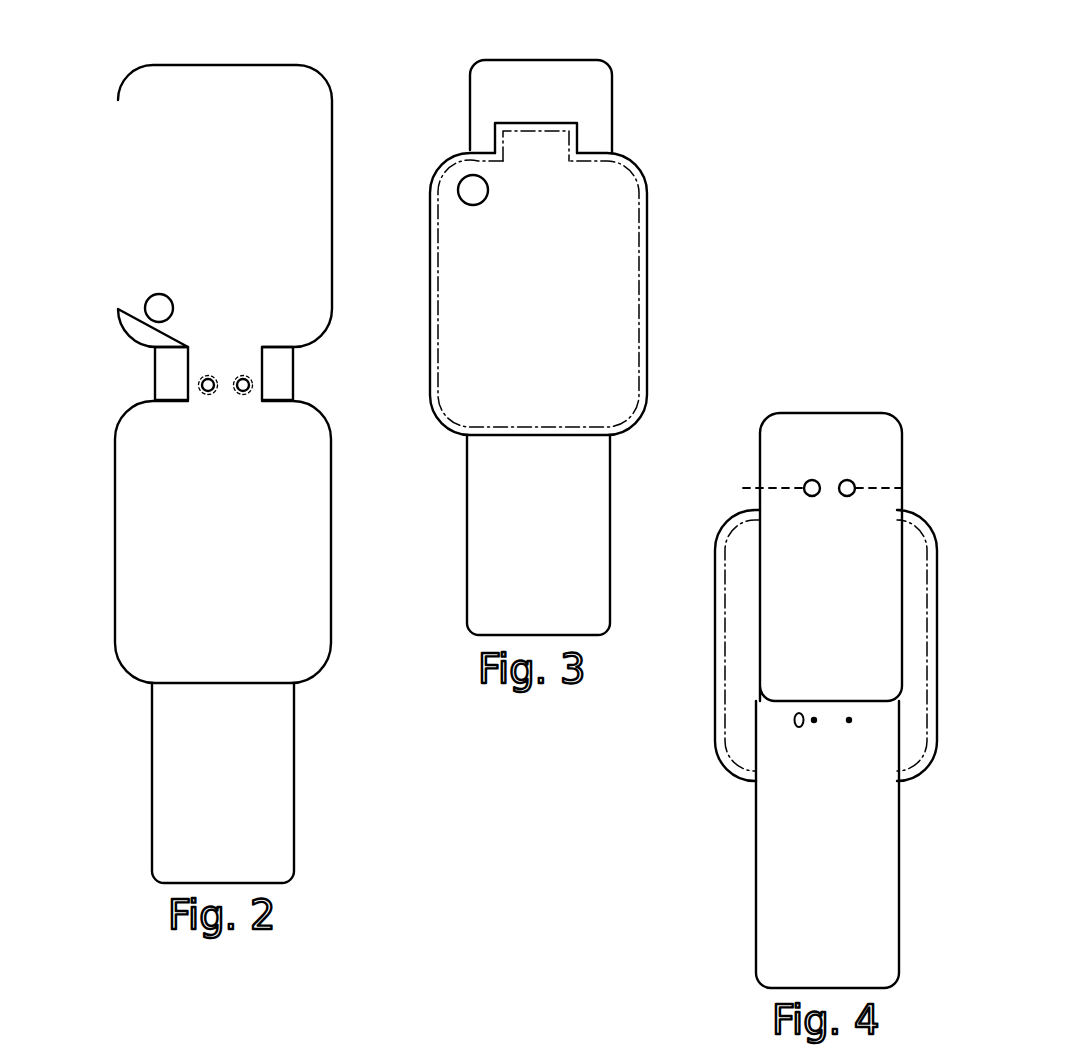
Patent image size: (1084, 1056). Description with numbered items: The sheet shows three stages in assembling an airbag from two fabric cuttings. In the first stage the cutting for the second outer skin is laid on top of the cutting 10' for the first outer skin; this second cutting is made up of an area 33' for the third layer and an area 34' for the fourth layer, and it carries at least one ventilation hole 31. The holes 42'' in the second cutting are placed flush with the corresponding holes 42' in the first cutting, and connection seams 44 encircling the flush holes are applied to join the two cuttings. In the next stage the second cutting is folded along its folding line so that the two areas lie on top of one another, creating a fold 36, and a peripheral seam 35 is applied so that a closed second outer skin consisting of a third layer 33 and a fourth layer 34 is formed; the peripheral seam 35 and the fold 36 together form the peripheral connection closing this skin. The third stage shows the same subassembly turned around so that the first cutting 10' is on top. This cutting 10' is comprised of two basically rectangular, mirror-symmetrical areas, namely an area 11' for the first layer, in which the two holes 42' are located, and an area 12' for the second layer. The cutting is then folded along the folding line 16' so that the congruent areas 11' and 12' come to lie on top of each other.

In FIG. 2, the area for the fourth layer 34' is at (187, 206).
In FIG. 2, the ventilation hole 31 is at (157, 306).
In FIG. 2, the connection seams 44 is at (197, 382).
In FIG. 2, the area for the third layer 33' is at (262, 542).
In FIG. 2, the cutting for the first outer skin 10' is at (273, 783).
In FIG. 3, the fold 36 is at (537, 121).
In FIG. 3, the third layer 33 is at (594, 347).
In FIG. 4, the third layer 33 is at (788, 645).
In FIG. 3, the peripheral seam 35 is at (648, 283).
In FIG. 3, the fourth layer 34 is at (593, 264).
In FIG. 4, the holes for overflow opening 42' is at (854, 410).
In FIG. 4, the area for the first layer 11' is at (864, 535).
In FIG. 4, the holes in the second outer skin cutting 42'' is at (826, 488).
In FIG. 4, the folding line 16' is at (746, 730).
In FIG. 4, the area for the second layer 12' is at (781, 844).